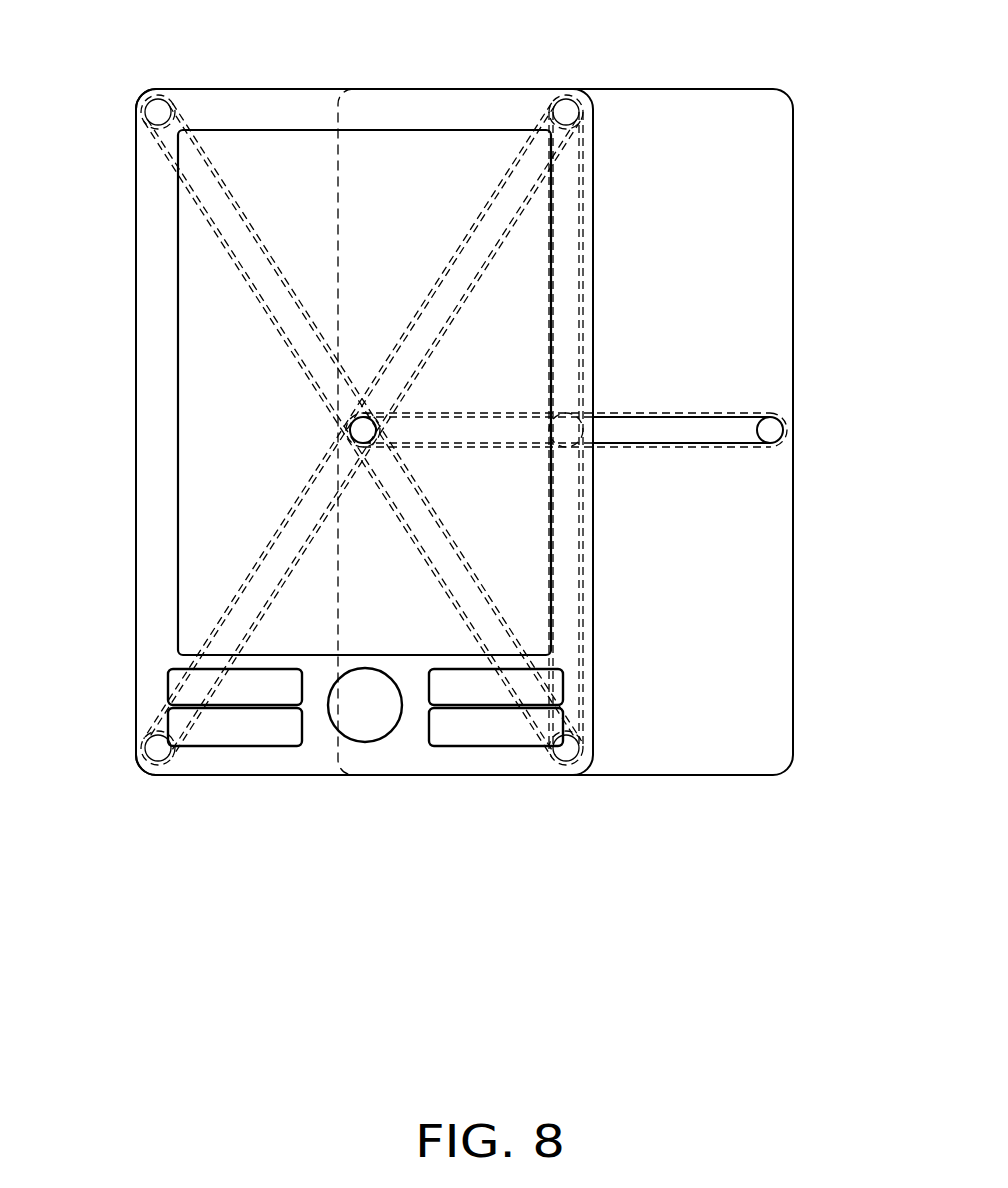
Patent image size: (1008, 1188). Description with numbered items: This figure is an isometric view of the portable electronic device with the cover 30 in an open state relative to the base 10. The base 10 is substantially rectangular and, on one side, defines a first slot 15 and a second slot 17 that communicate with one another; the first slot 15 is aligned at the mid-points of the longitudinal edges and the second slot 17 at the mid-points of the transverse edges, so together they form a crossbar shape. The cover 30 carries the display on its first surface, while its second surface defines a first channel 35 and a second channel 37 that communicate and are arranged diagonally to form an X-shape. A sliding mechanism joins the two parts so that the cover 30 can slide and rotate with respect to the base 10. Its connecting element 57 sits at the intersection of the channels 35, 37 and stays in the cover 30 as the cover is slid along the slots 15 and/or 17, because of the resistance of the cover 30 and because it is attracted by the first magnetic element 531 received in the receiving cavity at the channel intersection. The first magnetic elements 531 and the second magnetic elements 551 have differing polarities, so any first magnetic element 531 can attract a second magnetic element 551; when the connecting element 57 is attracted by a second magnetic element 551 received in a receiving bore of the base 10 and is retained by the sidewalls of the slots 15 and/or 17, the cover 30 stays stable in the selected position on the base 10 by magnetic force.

The base 10 is at (750, 625).
The cover 30 is at (165, 562).
The first channel 35 is at (520, 185).
The second channel 37 is at (214, 186).
The second slot 17 is at (565, 200).
The second magnetic element 551 is at (155, 108).
The connecting element 57 is at (340, 416).
The first slot 15 is at (668, 427).
The first magnetic element 531 is at (770, 433).